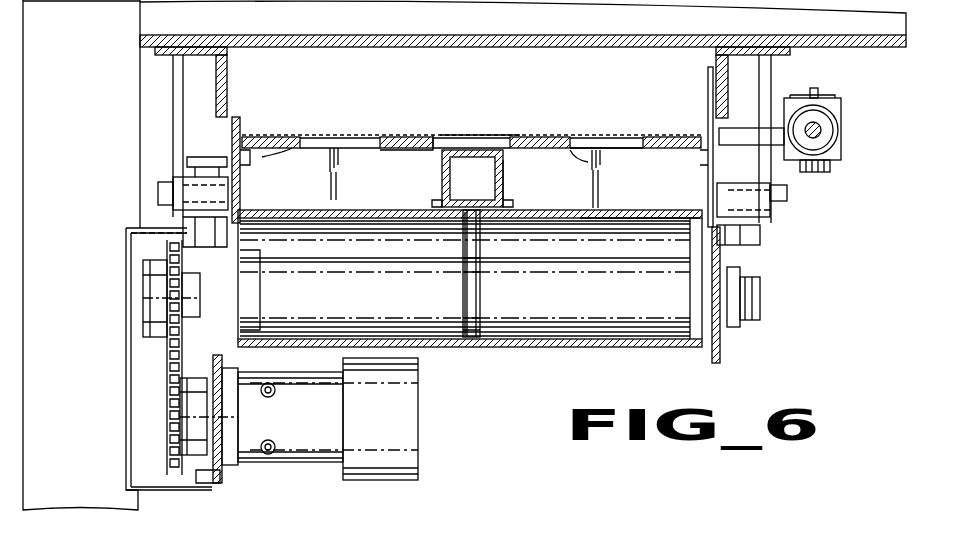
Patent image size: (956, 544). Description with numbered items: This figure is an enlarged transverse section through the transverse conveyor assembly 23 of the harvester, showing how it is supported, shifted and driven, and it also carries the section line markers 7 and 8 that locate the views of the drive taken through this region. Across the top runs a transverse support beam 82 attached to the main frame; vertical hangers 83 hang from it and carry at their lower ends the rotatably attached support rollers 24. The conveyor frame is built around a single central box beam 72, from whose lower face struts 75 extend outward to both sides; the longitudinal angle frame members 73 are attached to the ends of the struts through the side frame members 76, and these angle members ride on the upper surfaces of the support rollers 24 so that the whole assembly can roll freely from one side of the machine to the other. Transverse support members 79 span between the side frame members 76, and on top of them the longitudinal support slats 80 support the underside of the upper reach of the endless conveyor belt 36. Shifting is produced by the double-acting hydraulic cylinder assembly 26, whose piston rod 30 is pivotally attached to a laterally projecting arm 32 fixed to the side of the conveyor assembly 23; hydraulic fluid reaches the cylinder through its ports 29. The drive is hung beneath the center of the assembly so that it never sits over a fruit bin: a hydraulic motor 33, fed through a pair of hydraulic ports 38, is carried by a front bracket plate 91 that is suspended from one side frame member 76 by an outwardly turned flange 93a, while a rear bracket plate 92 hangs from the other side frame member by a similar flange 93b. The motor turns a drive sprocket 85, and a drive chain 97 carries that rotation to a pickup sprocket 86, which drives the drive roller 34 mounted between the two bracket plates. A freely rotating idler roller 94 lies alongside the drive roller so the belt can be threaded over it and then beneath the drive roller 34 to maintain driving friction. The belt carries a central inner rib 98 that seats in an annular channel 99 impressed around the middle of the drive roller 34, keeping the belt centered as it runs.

The section line 7- 7 is at (117, 107).
The section line 8- 8 is at (236, 65).
The transverse conveyor assembly 23 is at (428, 112).
The support roller 24 is at (205, 157).
The hydraulic piston and cylinder assembly 26 is at (847, 145).
The hydraulic port 29 is at (818, 90).
The piston rod 30 is at (821, 125).
The laterally projecting arm 32 is at (743, 130).
The hydraulic motor 33 is at (272, 462).
The drive roller 34 is at (597, 304).
The endless conveyor belt 36 is at (590, 128).
The hydraulic port 38 is at (268, 440).
The central box beam 72 is at (503, 165).
The longitudinal angle frame member 73 is at (232, 125).
The strut 75 is at (300, 210).
The side frame member 76 is at (238, 168).
The support member 79 is at (400, 186).
The longitudinal support slat 80 is at (278, 150).
The transverse support beam 82 is at (157, 50).
The vertical hanger 83 is at (175, 83).
The drive sprocket 85 is at (170, 400).
The pickup sprocket 86 is at (170, 268).
The front bracket plate 91 is at (232, 280).
The rear bracket plate 92 is at (722, 355).
The outwardly turned flange 93a is at (185, 228).
The outwardly turned flange 93b is at (750, 240).
The idler roller 94 is at (583, 228).
The drive chain 97 is at (170, 360).
The central inner rib 98 is at (477, 140).
The annular channel 99 is at (472, 298).